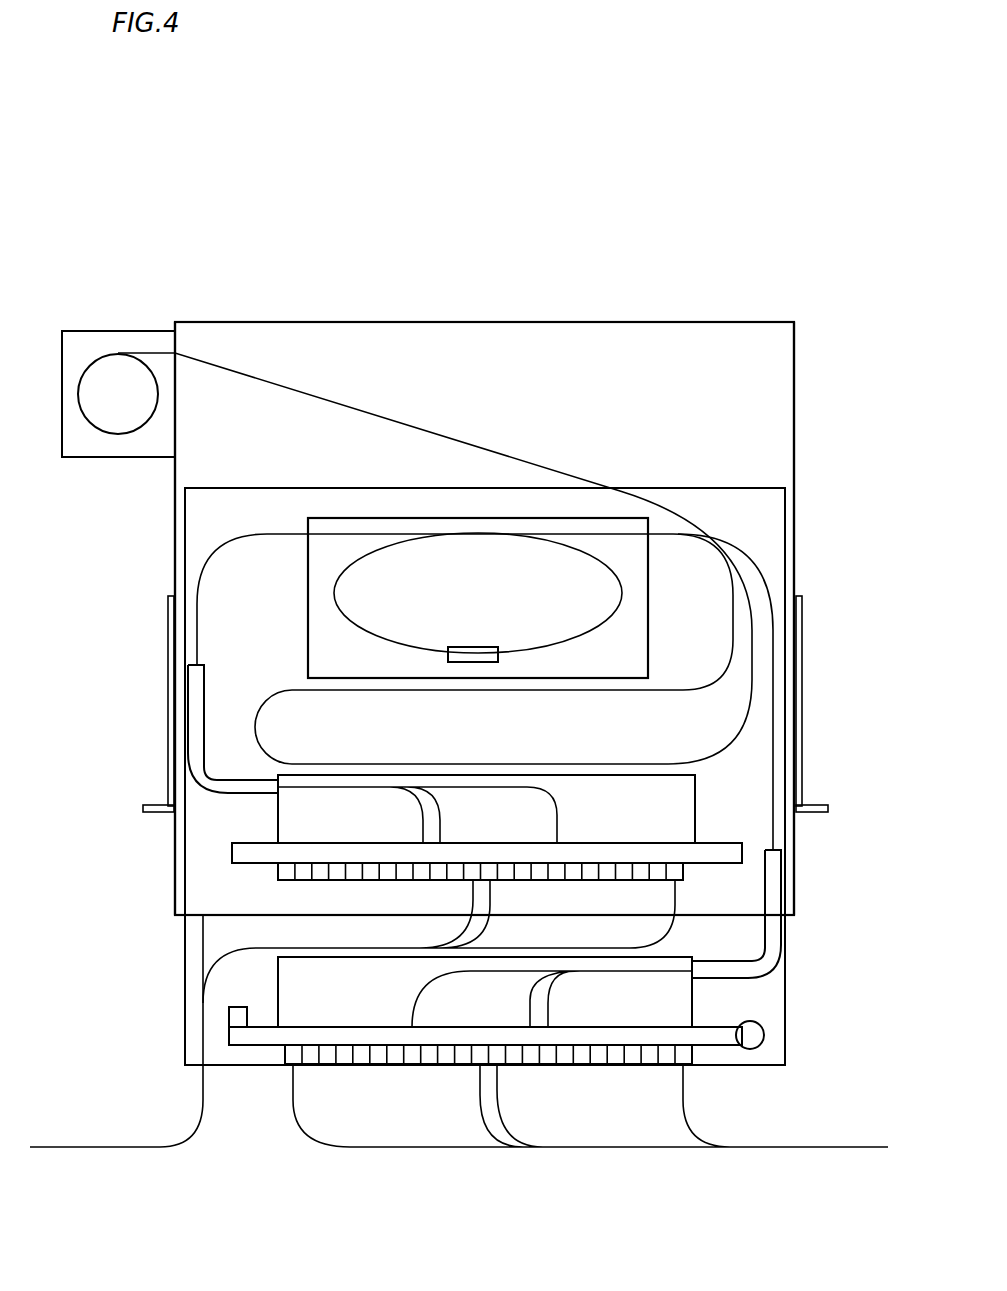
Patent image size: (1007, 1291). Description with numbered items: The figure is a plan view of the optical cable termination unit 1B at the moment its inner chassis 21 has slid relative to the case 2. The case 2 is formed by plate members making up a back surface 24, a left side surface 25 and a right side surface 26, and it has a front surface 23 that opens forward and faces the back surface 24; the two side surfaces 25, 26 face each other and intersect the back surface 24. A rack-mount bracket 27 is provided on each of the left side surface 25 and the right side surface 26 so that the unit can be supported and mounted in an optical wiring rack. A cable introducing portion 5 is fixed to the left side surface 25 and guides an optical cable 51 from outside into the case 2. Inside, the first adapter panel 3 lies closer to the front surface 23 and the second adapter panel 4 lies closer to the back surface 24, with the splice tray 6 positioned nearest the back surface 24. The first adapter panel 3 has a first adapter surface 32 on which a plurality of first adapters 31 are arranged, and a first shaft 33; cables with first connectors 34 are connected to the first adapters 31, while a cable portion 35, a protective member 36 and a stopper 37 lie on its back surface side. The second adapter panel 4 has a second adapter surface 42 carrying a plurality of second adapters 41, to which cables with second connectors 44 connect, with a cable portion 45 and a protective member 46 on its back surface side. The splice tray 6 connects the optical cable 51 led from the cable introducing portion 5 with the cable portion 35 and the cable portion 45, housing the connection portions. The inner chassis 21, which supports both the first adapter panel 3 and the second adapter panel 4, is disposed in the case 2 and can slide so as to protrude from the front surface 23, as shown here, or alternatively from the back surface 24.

The termination unit 1B is at (822, 268).
The case 2 is at (686, 295).
The first adapter panel 3 is at (715, 1008).
The second adapter panel 4 is at (238, 826).
The cable introducing portion 5 is at (62, 400).
The splice tray 6 is at (649, 612).
The inner chassis 21 is at (713, 492).
The front surface 23 is at (203, 917).
The back surface 24 is at (487, 321).
The left side surface 25 is at (175, 547).
The right side surface 26 is at (795, 537).
The rack-mount bracket 27 is at (148, 805).
The first adapters 31 is at (636, 1066).
The first adapter surface 32 is at (720, 1046).
The first shaft 33 is at (750, 1049).
The cables with first connectors 34 is at (548, 997).
The cable portion 35 is at (772, 780).
The protective member 36 is at (764, 898).
The stopper 37 is at (240, 1007).
The second adapters 41 is at (318, 882).
The second adapter surface 42 is at (260, 865).
The cables with second connectors 44 is at (557, 812).
The cable portion 45 is at (197, 617).
The protective member 46 is at (205, 727).
The optical cable 51 is at (352, 406).